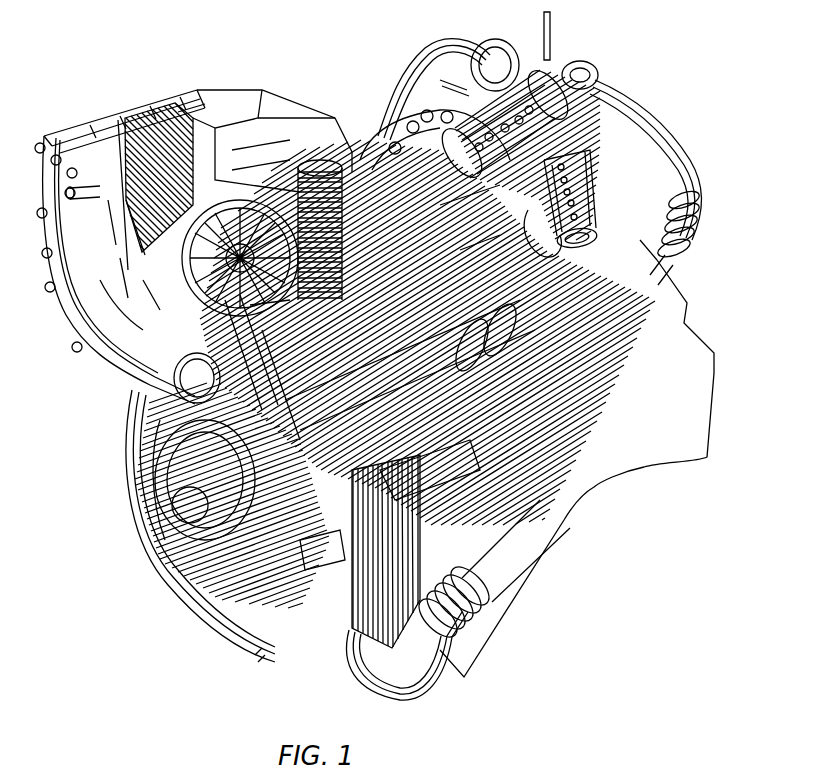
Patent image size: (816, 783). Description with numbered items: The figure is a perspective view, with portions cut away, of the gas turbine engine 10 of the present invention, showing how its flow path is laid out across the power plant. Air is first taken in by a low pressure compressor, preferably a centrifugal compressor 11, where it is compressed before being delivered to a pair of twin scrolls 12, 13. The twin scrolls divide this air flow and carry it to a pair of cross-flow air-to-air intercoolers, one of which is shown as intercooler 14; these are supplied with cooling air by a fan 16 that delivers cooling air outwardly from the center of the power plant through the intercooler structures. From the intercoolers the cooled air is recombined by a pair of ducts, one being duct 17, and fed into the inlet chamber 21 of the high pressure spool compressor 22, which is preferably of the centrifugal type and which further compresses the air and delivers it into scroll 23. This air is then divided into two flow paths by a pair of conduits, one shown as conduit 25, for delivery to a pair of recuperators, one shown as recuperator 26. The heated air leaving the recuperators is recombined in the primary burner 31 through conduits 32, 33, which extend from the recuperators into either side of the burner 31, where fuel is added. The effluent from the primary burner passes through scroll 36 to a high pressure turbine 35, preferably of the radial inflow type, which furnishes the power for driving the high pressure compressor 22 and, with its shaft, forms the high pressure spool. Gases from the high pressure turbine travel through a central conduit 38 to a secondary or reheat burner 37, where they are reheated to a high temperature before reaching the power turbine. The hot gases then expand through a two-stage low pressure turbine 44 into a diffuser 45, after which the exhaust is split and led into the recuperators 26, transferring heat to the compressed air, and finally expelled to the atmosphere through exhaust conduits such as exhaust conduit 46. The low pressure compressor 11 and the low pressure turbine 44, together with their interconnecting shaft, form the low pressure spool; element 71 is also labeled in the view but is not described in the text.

The engine 10 is at (191, 114).
The centrifugal compressor 11 is at (166, 489).
The twin scroll 12 is at (258, 658).
The twin scroll 13 is at (70, 301).
The intercooler 14 is at (146, 98).
The fan 16 is at (233, 215).
The duct 17 is at (251, 118).
The inlet chamber 21 is at (366, 215).
The high pressure spool compressor 22 is at (400, 222).
The scroll 23 is at (392, 150).
The conduit 25 is at (416, 685).
The recuperator 26 is at (555, 544).
The primary burner 31 is at (531, 44).
The conduit 32 is at (695, 165).
The conduit 33 is at (438, 55).
The high pressure turbine 35 is at (470, 202).
The scroll 36 is at (480, 247).
The reheat burner 37 is at (590, 212).
The central conduit 38 is at (536, 225).
The two-stage low pressure turbine 44 is at (427, 332).
The diffuser 45 is at (416, 470).
The exhaust conduit 46 is at (716, 376).
The drive 71 is at (322, 550).